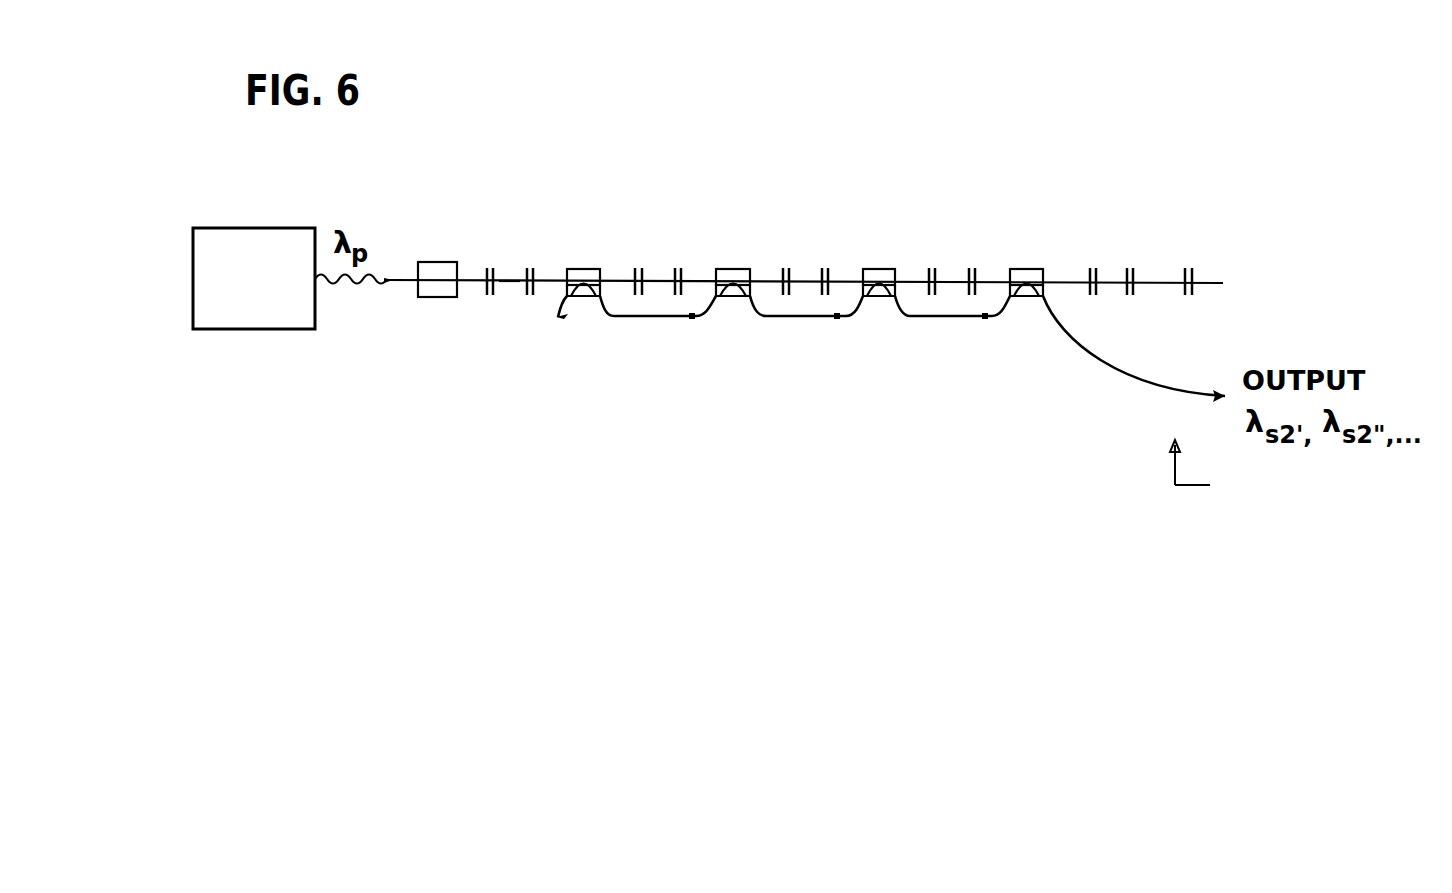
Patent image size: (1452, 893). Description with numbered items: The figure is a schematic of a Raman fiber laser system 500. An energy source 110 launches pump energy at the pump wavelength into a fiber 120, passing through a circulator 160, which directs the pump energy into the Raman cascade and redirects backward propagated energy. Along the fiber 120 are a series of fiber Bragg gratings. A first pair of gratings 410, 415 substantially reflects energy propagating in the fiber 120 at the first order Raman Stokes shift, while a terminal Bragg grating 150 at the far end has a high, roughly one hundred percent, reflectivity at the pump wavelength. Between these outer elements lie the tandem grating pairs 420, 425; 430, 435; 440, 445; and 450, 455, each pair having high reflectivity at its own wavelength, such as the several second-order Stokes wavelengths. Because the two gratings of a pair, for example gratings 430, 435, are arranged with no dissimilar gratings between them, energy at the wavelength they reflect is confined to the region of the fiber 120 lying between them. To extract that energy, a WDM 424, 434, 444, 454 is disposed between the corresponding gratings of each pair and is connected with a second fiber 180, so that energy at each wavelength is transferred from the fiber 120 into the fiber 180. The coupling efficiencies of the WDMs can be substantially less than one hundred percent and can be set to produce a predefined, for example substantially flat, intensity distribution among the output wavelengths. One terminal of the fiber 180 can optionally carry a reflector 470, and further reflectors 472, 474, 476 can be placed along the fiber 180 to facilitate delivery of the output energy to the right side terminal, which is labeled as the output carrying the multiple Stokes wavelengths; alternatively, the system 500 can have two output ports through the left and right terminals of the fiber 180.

The energy source 110 is at (271, 295).
The fiber 120 is at (507, 283).
The Bragg grating 150 is at (1190, 268).
The circulator 160 is at (428, 262).
The fiber 180 is at (795, 318).
The fiber Bragg grating 410 is at (488, 267).
The fiber Bragg grating 415 is at (1132, 268).
The fiber Bragg grating 420 is at (531, 267).
The WDM 424 is at (583, 269).
The fiber Bragg grating 425 is at (640, 268).
The fiber Bragg grating 430 is at (680, 268).
The WDM 434 is at (733, 269).
The fiber Bragg grating 435 is at (787, 268).
The fiber Bragg grating 440 is at (824, 268).
The WDM 444 is at (877, 269).
The fiber Bragg grating 445 is at (933, 268).
The fiber Bragg grating 450 is at (972, 268).
The WDM 454 is at (1023, 269).
The fiber Bragg grating 455 is at (1093, 268).
The reflector 470 is at (560, 318).
The reflector 472 is at (694, 317).
The reflector 474 is at (839, 317).
The reflector 476 is at (987, 317).
The system 500 is at (1270, 500).